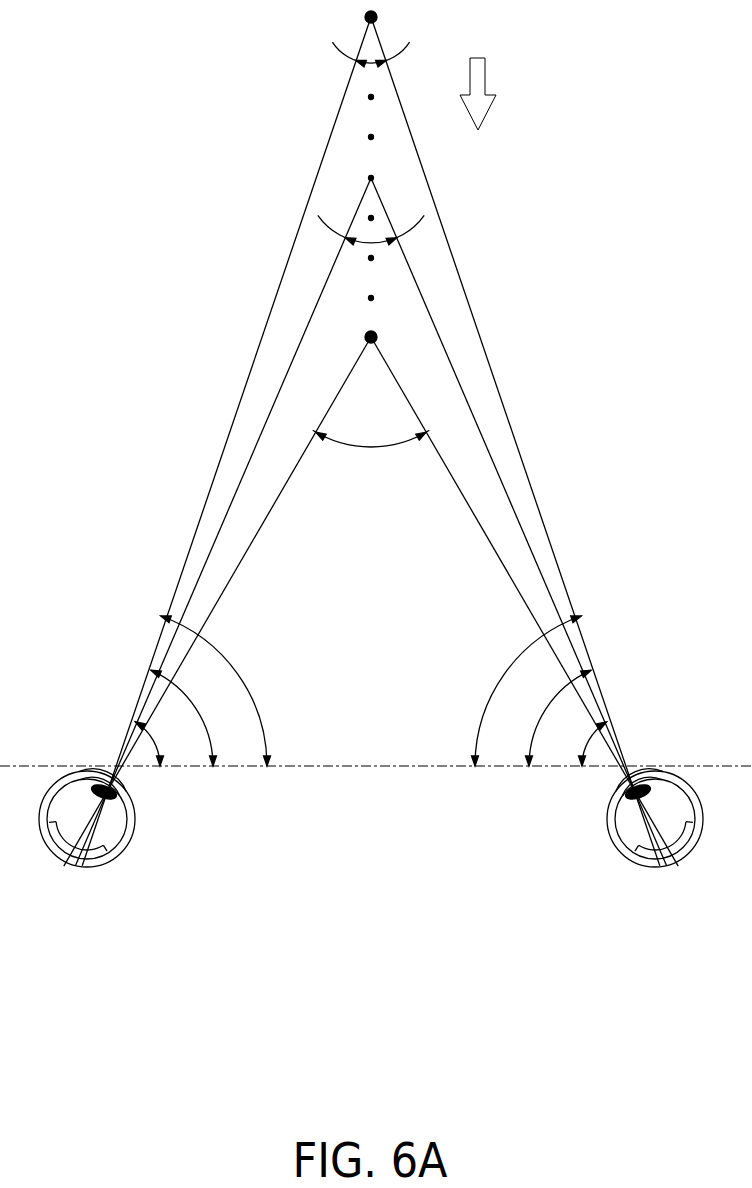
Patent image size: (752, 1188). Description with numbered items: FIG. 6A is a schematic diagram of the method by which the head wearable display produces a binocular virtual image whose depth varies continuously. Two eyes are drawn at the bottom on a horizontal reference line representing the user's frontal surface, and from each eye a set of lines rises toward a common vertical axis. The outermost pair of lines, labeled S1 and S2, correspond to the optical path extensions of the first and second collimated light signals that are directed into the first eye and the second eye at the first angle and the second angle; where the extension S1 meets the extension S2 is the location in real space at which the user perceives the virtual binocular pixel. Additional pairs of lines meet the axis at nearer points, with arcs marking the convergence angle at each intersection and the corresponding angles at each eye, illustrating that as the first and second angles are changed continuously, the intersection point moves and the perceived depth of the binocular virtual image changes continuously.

The first sight line S1 is at (515, 441).
The second sight line S2 is at (226, 441).